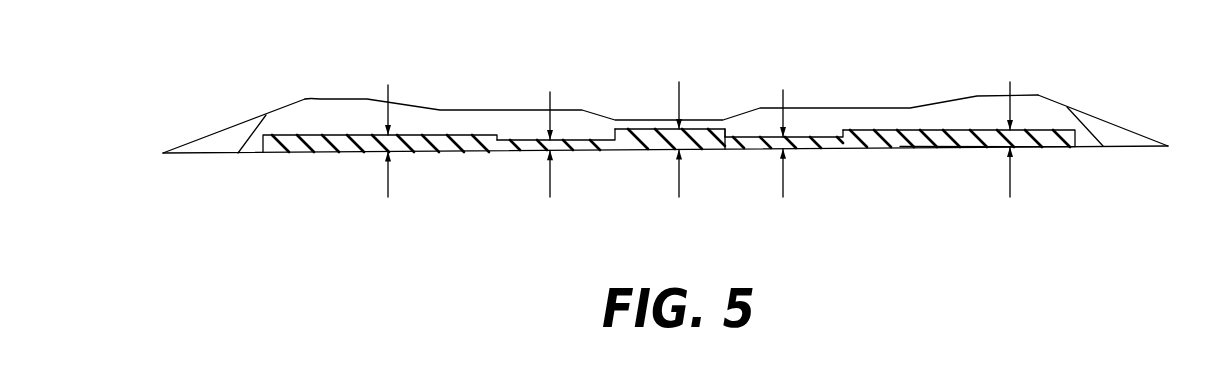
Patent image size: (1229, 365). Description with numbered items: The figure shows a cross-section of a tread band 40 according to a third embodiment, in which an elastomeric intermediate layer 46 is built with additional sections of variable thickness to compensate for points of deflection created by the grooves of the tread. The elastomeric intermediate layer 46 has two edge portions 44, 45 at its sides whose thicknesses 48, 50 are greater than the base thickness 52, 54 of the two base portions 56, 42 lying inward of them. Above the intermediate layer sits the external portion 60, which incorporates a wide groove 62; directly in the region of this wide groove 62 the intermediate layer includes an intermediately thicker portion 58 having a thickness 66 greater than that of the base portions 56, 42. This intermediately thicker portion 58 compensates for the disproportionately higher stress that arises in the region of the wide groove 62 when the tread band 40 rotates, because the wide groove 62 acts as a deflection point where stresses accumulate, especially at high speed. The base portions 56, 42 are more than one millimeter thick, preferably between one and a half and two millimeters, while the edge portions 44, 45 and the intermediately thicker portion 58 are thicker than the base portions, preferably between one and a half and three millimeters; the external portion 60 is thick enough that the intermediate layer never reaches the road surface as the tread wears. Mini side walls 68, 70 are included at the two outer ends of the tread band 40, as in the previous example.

The tread band 40 is at (914, 69).
The base portion 42 is at (828, 149).
The edge portion 44 is at (342, 133).
The edge portion 45 is at (952, 152).
The elastomeric intermediate layer 46 is at (1040, 128).
The thickness 48 is at (389, 156).
The thickness 50 is at (1011, 154).
The base thickness 52 is at (547, 159).
The base thickness 54 is at (784, 157).
The base portion 56 is at (583, 150).
The intermediately thicker portion 58 is at (722, 150).
The external portion 60 is at (520, 108).
The wide groove 62 is at (652, 118).
The thickness 66 is at (679, 154).
The mini side wall 68 is at (205, 147).
The mini side wall 70 is at (1113, 137).